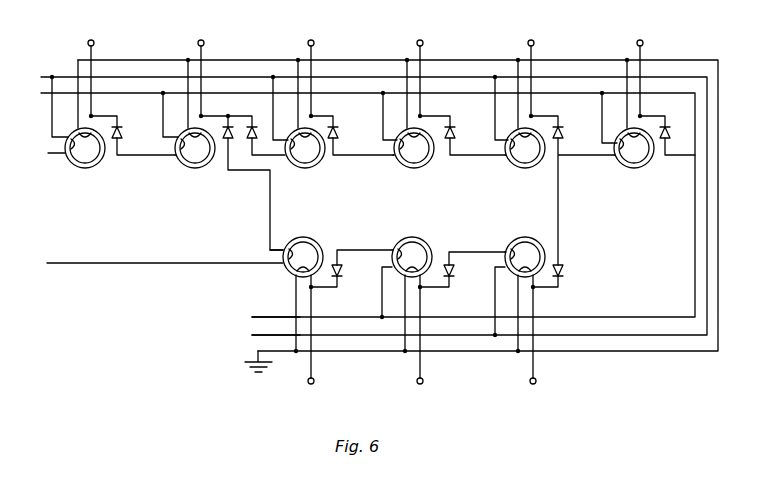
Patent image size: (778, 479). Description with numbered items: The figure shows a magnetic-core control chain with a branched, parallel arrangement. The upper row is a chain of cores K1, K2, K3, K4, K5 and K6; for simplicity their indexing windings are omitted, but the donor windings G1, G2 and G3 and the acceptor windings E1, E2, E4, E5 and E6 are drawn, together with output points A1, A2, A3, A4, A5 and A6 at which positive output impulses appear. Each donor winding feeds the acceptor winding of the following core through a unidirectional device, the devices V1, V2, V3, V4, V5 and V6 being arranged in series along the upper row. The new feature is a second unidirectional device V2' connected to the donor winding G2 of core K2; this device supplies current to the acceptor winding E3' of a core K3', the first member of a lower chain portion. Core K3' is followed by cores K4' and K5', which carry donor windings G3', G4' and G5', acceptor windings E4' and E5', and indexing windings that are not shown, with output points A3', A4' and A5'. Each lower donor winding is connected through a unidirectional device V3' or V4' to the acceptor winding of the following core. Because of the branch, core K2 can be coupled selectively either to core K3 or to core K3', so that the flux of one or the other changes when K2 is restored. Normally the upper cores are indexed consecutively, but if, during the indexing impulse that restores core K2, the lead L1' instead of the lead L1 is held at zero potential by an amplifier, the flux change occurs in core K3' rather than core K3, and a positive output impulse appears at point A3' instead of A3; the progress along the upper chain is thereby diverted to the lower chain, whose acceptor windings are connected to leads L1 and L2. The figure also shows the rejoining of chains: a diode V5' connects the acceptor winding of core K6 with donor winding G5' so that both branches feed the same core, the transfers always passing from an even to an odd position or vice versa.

The output point A1 is at (97, 74).
The output point A2 is at (220, 74).
The output point A3 is at (315, 74).
The output point A4 is at (428, 74).
The output point A5 is at (538, 74).
The output point A6 is at (646, 74).
The output point A3' is at (312, 344).
The output point A4' is at (420, 344).
The output point A5' is at (530, 344).
The acceptor winding E1 is at (46, 154).
The acceptor winding E2 is at (159, 151).
The acceptor winding E4 is at (383, 170).
The acceptor winding E5 is at (494, 170).
The acceptor winding E6 is at (604, 170).
The acceptor winding E3' is at (266, 253).
The acceptor winding E4' is at (379, 265).
The acceptor winding E5' is at (491, 266).
The donor winding G1 is at (63, 107).
The donor winding G2 is at (175, 115).
The donor winding G3 is at (392, 116).
The donor winding G3' is at (286, 314).
The donor winding G4' is at (394, 293).
The donor winding G5' is at (506, 302).
The core K1 is at (99, 162).
The core K2 is at (209, 162).
The core K3 is at (311, 161).
The core K4 is at (421, 163).
The core K5 is at (529, 163).
The core K6 is at (648, 162).
The core K3' is at (313, 246).
The core K4' is at (420, 246).
The core K5' is at (532, 246).
The unidirectional device V1 is at (143, 136).
The unidirectional device V2 is at (266, 136).
The second unidirectional device V2' is at (252, 172).
The unidirectional device V3 is at (361, 136).
The unidirectional device V4 is at (475, 140).
The unidirectional device V5 is at (583, 195).
The unidirectional device V6 is at (677, 140).
The unidirectional device V3' is at (351, 278).
The unidirectional device V4' is at (462, 279).
The diode V5' is at (560, 278).
The lead L1 is at (264, 336).
The lead L2 is at (266, 318).
The lead L1' is at (165, 253).